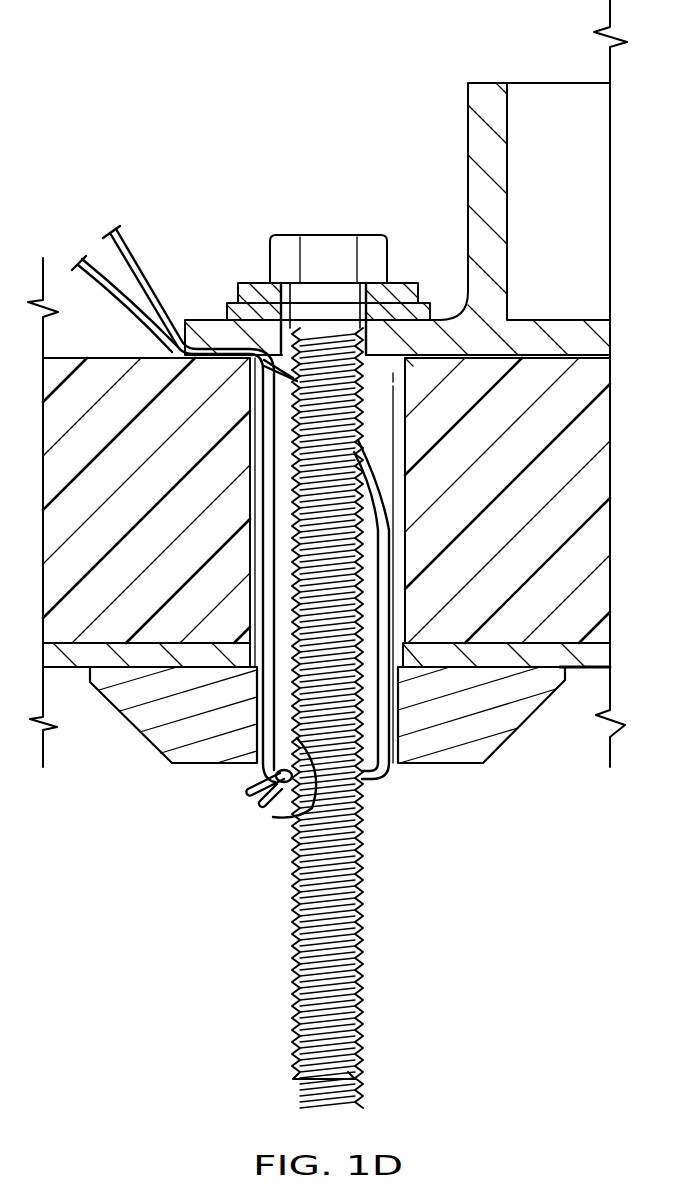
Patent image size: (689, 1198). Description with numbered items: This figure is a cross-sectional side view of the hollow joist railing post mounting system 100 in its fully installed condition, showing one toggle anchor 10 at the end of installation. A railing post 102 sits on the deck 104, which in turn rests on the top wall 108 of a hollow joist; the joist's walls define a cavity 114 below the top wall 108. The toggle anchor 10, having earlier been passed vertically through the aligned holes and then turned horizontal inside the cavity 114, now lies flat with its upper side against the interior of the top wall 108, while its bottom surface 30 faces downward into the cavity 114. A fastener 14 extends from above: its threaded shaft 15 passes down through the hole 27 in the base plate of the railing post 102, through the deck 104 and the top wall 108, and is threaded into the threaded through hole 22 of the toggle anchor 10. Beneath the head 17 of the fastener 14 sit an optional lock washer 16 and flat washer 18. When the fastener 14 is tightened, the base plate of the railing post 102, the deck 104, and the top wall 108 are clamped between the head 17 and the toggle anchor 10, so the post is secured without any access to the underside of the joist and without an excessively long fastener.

The hollow joist railing post mounting system 100 is at (112, 88).
The fastener 14 is at (297, 250).
The head 17 is at (270, 252).
The lock washer 16 is at (238, 289).
The flat washer 18 is at (228, 312).
The hole 27 is at (366, 333).
The shaft 15 is at (363, 918).
The railing post 102 is at (480, 188).
The deck 104 is at (105, 368).
The top wall 108 is at (162, 640).
The cavity 114 is at (583, 668).
The bottom surface 30 is at (205, 763).
The toggle anchor 10 is at (465, 760).
The threaded through hole 22 is at (273, 817).